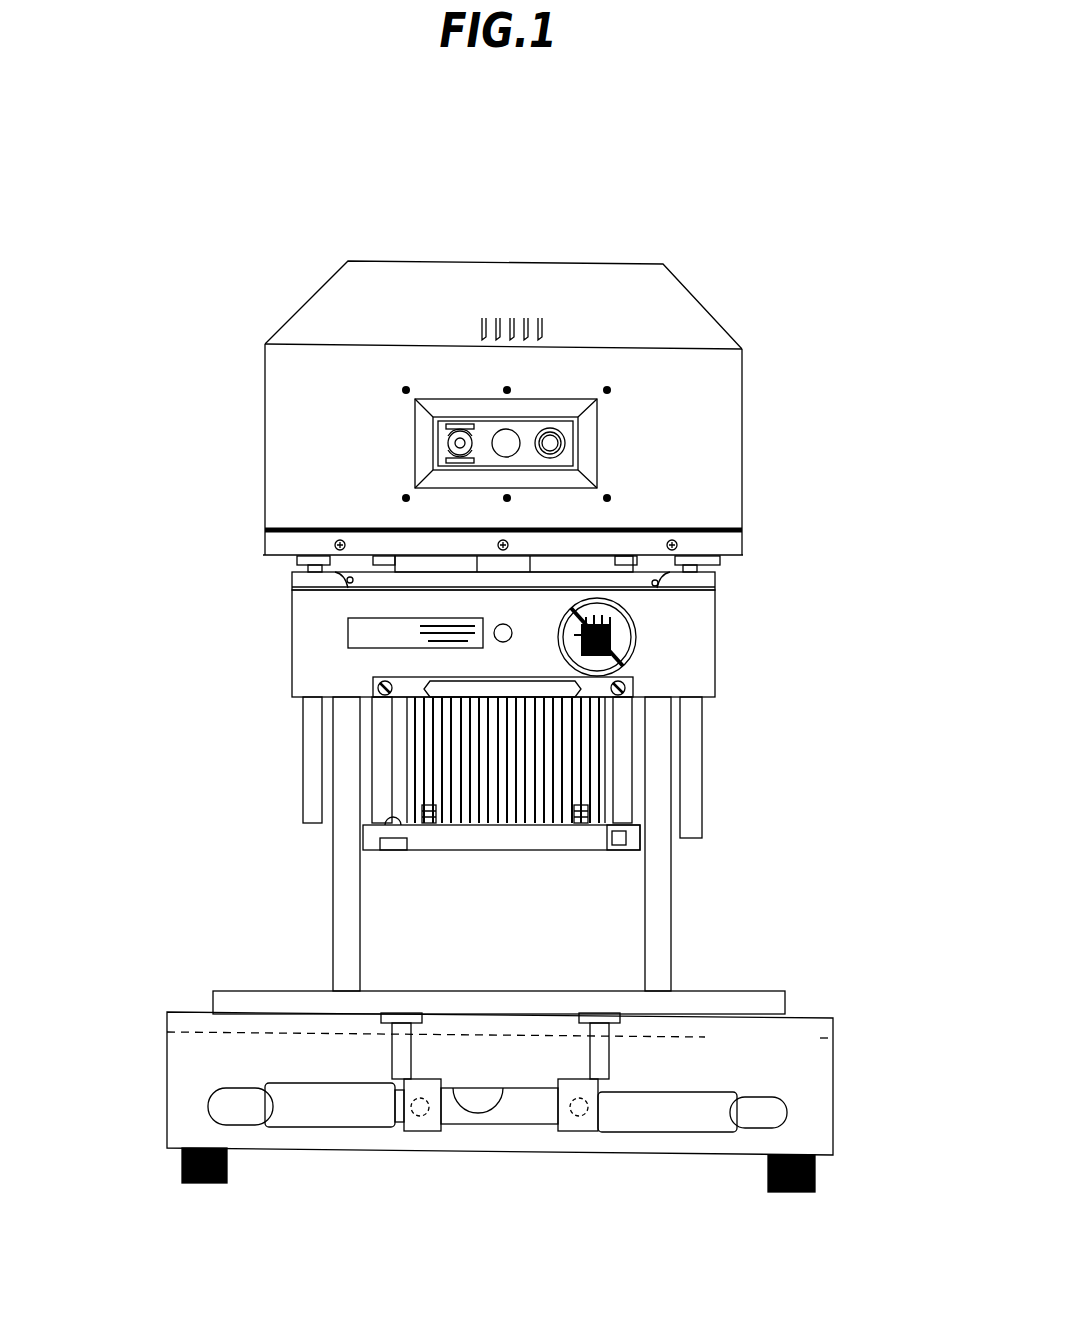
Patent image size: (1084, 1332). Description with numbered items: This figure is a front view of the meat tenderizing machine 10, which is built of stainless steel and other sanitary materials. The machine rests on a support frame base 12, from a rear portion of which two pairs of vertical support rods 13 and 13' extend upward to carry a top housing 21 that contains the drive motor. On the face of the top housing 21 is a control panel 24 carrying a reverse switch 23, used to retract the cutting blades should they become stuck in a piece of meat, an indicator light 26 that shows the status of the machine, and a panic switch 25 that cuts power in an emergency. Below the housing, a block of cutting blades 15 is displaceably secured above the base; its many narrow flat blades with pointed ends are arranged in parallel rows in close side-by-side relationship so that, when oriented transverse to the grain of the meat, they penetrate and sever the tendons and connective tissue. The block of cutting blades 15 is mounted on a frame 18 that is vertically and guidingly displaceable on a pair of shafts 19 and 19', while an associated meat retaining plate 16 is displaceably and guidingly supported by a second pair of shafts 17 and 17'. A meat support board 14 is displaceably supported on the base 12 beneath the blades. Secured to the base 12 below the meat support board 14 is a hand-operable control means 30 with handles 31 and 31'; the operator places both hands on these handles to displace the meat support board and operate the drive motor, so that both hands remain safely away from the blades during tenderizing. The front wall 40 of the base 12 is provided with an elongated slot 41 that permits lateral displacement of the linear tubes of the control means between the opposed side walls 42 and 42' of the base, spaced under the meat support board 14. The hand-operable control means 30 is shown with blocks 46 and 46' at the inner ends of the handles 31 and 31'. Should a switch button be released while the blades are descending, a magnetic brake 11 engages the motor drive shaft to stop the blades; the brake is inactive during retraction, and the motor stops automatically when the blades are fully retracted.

The meat tenderizing machine 10 is at (302, 257).
The top housing 21 is at (703, 303).
The control panel 24 is at (537, 405).
The reverse switch 23 is at (450, 443).
The panic switch 25 is at (565, 443).
The indicator light 26 is at (498, 452).
The frame 18 is at (292, 638).
The shaft 19 is at (261, 760).
The shaft 19' is at (737, 767).
The shaft 17 is at (296, 760).
The shaft 17' is at (704, 760).
The vertical support rod 13 is at (278, 844).
The vertical support rod 13' is at (718, 844).
The block of cutting blades 15 is at (512, 767).
The meat retaining plate 16 is at (380, 848).
The meat support board 14 is at (493, 991).
The magnetic brake 11 is at (168, 1033).
The support frame base 12 is at (208, 1057).
The front wall 40 is at (292, 1047).
The elongated slot 41 is at (448, 1097).
The hand-operable control means 30 is at (620, 1082).
The handle 31 is at (306, 1151).
The handle 31' is at (692, 1158).
The left handle block 46 is at (422, 1149).
The right handle block 46' is at (578, 1149).
The side wall 42 is at (145, 1146).
The side wall 42' is at (845, 1158).